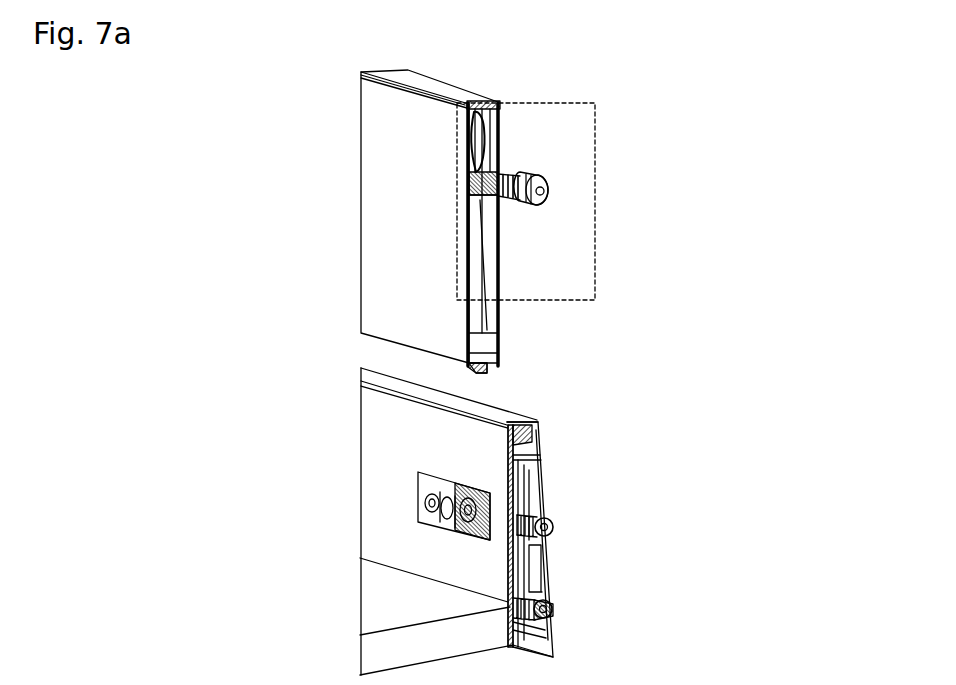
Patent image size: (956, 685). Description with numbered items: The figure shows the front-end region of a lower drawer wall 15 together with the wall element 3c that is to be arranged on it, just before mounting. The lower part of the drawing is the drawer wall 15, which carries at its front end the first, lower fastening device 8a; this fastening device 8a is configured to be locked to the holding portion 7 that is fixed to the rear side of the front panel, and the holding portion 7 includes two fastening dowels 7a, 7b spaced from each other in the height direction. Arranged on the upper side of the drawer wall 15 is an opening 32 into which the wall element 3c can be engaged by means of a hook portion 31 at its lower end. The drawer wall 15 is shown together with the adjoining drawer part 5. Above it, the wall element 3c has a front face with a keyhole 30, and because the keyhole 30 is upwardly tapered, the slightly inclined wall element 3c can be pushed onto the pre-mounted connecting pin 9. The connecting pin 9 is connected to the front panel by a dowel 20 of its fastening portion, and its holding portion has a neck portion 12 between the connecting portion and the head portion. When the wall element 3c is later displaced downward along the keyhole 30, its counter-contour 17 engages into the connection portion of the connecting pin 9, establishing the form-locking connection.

The wall element 3c is at (382, 264).
The keyhole 30 is at (478, 147).
The neck portion 12 is at (477, 174).
The counter-contour 17 is at (499, 109).
The dowel 20 is at (550, 190).
The connecting pin 9 is at (549, 207).
The hook portion 31 is at (490, 373).
The drawer wall 15 is at (380, 420).
The drawer bottom 5 is at (382, 612).
The first fastening device 8a is at (433, 497).
The holding portion 7 is at (537, 560).
The fastening dowel 7a is at (553, 524).
The fastening dowel 7b is at (553, 610).
The opening 32 is at (513, 423).